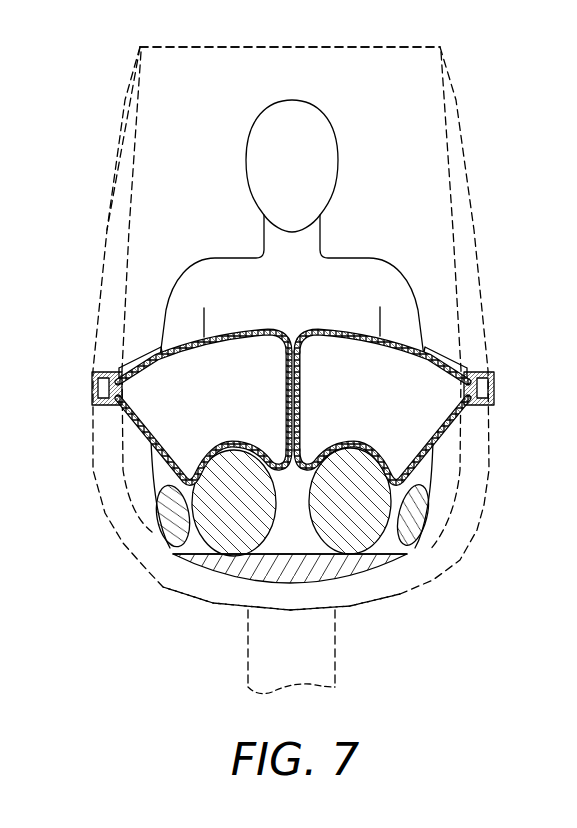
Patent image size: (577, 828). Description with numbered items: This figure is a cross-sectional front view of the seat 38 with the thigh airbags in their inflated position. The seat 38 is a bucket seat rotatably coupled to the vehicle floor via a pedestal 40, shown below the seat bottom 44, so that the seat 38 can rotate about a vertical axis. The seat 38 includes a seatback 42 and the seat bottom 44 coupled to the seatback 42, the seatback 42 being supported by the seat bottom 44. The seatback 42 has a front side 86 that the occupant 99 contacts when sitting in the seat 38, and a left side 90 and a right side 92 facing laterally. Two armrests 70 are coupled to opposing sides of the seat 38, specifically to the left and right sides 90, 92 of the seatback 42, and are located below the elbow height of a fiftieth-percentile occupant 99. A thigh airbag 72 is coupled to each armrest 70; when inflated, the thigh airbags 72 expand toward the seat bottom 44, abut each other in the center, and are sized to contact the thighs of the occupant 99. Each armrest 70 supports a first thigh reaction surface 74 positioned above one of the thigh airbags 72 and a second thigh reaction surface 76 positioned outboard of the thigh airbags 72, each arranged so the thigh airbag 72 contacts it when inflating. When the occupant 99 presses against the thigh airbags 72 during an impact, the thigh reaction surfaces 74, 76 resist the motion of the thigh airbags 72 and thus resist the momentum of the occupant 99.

The seat 38 is at (96, 191).
The pedestal 40 is at (247, 662).
The seatback 42 is at (125, 132).
The seat bottom 44 is at (163, 587).
The armrest 70 is at (126, 365).
The thigh airbag 72 is at (323, 327).
The first thigh reaction surface 74 is at (149, 368).
The second thigh reaction surface 76 is at (125, 398).
The front side 86 is at (452, 150).
The left side 90 is at (470, 188).
The right side 92 is at (107, 241).
The occupant 99 is at (353, 257).